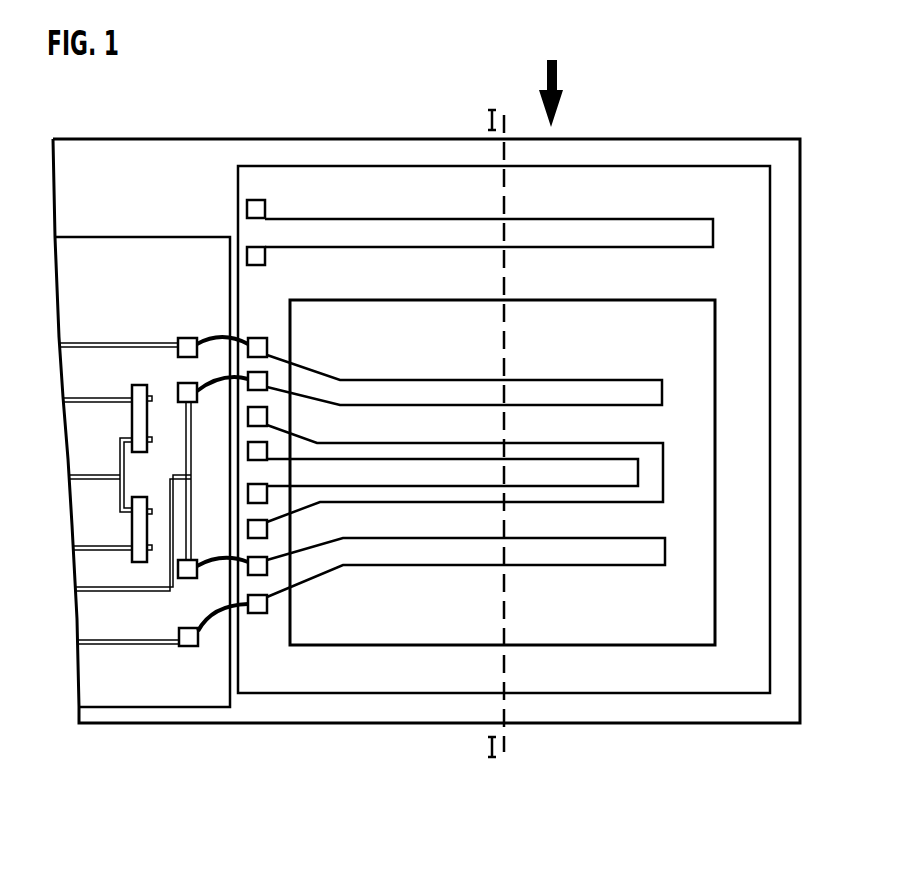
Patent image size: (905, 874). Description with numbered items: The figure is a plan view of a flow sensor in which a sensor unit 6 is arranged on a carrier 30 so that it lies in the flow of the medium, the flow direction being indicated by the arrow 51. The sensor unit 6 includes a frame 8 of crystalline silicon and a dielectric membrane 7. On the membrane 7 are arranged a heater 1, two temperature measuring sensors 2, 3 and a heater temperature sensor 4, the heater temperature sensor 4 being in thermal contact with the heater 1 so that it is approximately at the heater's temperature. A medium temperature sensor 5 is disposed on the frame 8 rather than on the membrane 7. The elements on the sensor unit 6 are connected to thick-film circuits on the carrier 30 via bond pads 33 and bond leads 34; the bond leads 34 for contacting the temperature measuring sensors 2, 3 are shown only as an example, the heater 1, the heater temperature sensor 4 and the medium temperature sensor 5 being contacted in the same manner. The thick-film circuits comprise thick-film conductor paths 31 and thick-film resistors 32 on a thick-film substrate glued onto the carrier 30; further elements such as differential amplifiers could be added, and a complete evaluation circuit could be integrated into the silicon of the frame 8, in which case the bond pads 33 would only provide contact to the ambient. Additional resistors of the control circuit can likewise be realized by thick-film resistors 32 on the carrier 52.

The heater 1 is at (663, 491).
The temperature measuring sensor 2 is at (662, 389).
The temperature measuring sensor 3 is at (665, 552).
The heater temperature sensor 4 is at (638, 468).
The medium temperature sensor 5 is at (713, 223).
The sensor unit 6 is at (698, 160).
The dielectric membrane 7 is at (690, 610).
The frame 8 is at (757, 657).
The carrier 30 is at (198, 152).
The thick-film conductor paths 31 is at (110, 341).
The thick-film resistors 32 is at (138, 421).
The bond pads 33 is at (268, 206).
The bond leads 34 is at (221, 336).
The arrow 51 is at (557, 70).
The carrier 52 is at (127, 710).